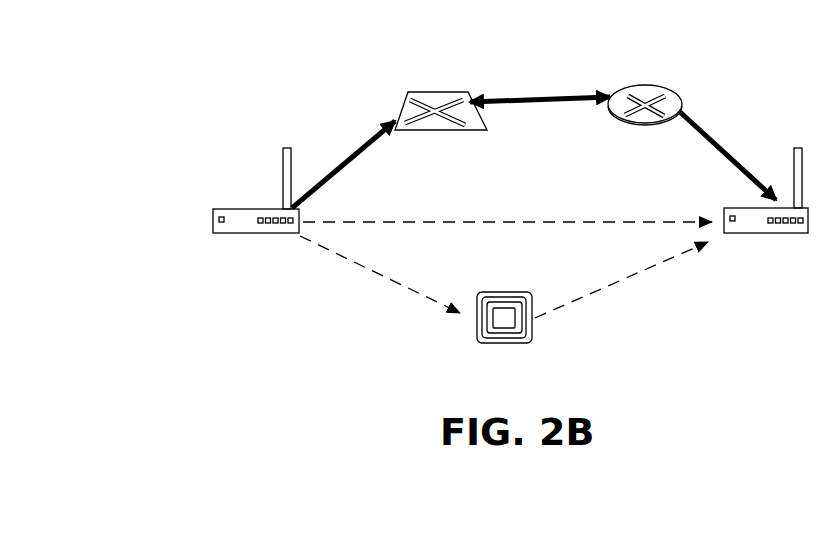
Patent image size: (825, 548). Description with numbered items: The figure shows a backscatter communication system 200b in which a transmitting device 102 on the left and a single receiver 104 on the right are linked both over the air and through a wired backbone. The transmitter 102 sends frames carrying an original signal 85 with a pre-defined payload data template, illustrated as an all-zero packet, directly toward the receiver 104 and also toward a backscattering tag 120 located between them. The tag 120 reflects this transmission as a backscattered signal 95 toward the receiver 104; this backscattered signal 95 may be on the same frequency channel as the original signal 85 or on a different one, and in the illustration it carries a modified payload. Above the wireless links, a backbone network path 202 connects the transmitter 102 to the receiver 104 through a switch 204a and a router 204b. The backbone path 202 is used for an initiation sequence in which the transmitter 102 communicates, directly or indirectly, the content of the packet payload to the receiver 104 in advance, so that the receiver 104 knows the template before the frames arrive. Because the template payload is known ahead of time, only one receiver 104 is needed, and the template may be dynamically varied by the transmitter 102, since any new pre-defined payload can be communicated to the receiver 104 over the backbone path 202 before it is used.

The backscatter communication system 200b is at (150, 152).
The transmitting device 102 is at (222, 208).
The receiver 104 is at (760, 207).
The switch 204a is at (437, 92).
The router 204b is at (648, 85).
The backbone network path 202 is at (552, 95).
The backscattering tag 120 is at (503, 344).
The original signal 85 is at (493, 224).
The backscattered signal 95 is at (597, 292).